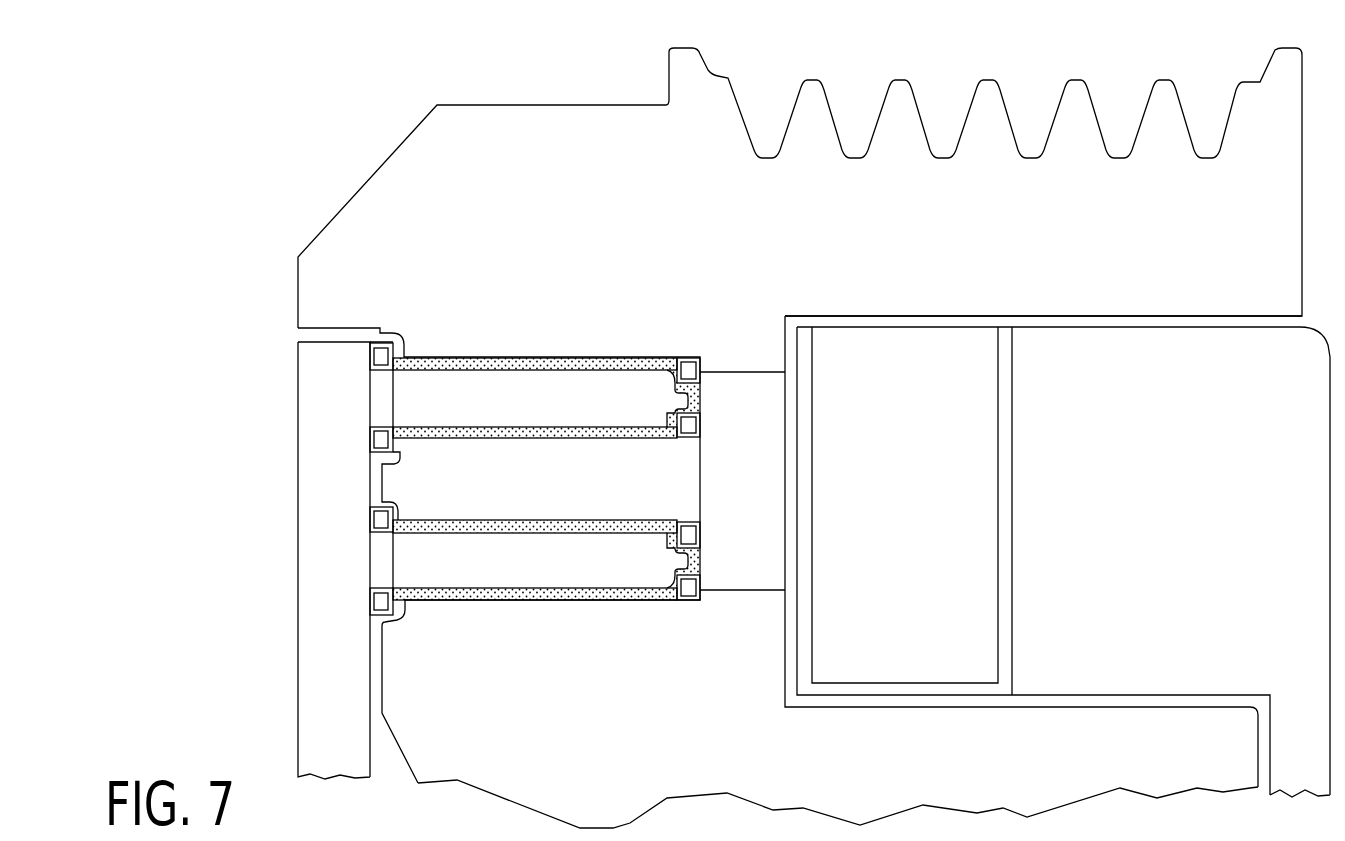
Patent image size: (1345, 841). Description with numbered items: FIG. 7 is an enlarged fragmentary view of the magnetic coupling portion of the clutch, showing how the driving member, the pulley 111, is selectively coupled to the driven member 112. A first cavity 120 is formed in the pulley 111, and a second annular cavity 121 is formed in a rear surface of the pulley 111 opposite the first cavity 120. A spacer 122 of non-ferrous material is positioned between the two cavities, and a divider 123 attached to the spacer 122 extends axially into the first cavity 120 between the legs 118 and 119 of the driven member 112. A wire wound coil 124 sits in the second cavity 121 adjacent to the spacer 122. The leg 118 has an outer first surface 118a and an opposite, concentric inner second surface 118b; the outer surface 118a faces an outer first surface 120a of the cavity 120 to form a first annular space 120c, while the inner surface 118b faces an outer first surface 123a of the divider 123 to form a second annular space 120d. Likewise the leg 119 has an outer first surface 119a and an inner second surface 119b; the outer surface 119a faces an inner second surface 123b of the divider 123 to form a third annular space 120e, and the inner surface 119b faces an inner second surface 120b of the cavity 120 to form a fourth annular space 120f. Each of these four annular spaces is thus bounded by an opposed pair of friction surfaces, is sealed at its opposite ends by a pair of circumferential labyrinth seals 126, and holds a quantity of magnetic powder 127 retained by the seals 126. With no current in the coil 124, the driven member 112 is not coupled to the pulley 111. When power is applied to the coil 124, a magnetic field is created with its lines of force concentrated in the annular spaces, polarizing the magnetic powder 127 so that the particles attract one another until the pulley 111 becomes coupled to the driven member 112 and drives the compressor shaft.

The pulley 111 is at (297, 257).
The driven member 112 is at (297, 638).
The leg 118 is at (524, 414).
The outer first surface of leg 118 118a is at (553, 357).
The inner second surface of leg 118 118b is at (688, 425).
The leg 119 is at (594, 572).
The outer first surface of leg 119 119a is at (652, 518).
The inner second surface of leg 119 119b is at (600, 600).
The first cavity 120 is at (561, 480).
The outer first surface of cavity 120 120a is at (610, 357).
The inner second surface of cavity 120 120b is at (453, 600).
The first annular space 120c is at (660, 358).
The second annular space 120d is at (556, 452).
The third annular space 120e is at (540, 533).
The fourth annular space 120f is at (657, 522).
The second annular cavity 121 is at (1015, 515).
The spacer 122 is at (766, 491).
The divider 123 is at (596, 504).
The outer first surface of divider 123a is at (455, 437).
The inner second surface of divider 123b is at (443, 533).
The wire wound coil 124 is at (926, 404).
The circumferential labyrinth seals 126 is at (378, 436).
The magnetic powder 127 is at (423, 357).